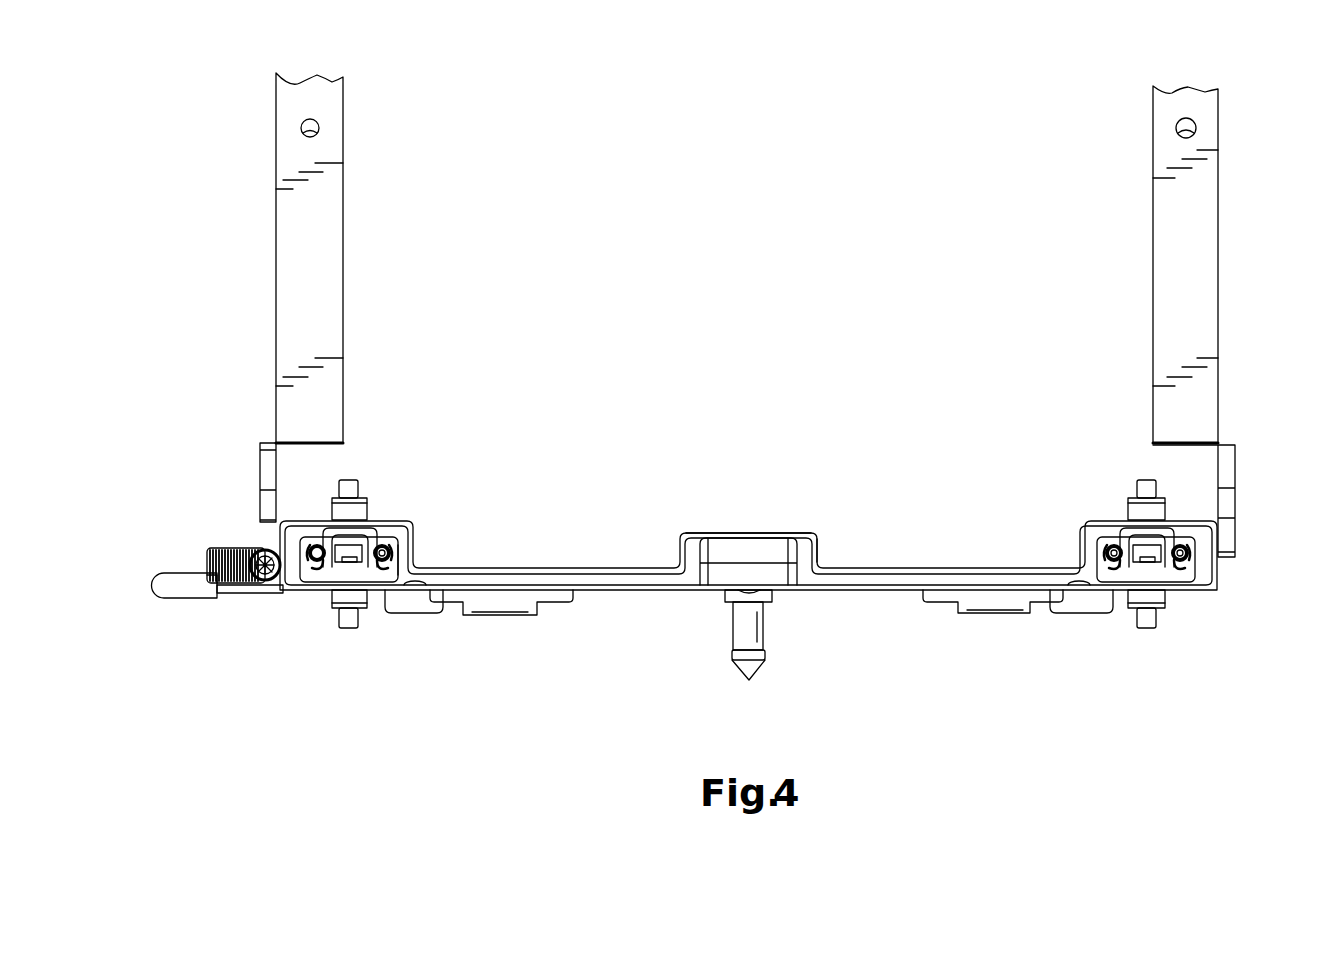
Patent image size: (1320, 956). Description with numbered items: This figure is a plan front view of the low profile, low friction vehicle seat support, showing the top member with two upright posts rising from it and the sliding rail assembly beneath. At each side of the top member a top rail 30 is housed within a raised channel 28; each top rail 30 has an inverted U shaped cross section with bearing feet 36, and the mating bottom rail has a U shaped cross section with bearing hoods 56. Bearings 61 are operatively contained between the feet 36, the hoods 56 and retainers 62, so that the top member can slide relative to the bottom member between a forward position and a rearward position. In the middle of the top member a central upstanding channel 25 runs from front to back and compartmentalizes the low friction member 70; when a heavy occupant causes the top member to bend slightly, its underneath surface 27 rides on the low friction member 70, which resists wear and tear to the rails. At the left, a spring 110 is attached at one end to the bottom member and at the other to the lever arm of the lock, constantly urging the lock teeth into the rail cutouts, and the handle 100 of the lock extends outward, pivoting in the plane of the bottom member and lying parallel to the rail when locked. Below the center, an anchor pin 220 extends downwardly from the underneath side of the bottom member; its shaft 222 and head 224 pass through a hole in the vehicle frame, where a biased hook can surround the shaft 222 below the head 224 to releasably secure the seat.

The central upstanding channel 25 is at (785, 533).
The underneath surface 27 is at (817, 558).
The raised channel 28 is at (413, 553).
The top rail 30 is at (366, 526).
The bearing feet 36 is at (385, 573).
The bearing hoods 56 is at (397, 543).
The bearings 61 is at (1190, 552).
The retainers 62 is at (1103, 553).
The low friction member 70 is at (732, 548).
The handle 100 is at (172, 600).
The spring 110 is at (230, 548).
The anchor pin 220 is at (769, 658).
The shaft 222 is at (763, 622).
The head 224 is at (767, 658).